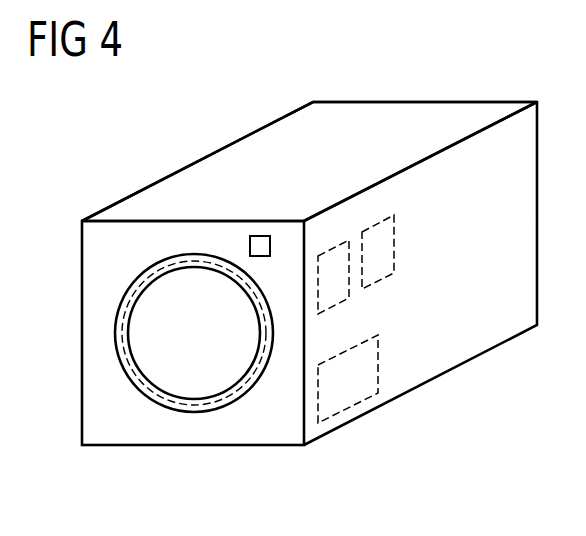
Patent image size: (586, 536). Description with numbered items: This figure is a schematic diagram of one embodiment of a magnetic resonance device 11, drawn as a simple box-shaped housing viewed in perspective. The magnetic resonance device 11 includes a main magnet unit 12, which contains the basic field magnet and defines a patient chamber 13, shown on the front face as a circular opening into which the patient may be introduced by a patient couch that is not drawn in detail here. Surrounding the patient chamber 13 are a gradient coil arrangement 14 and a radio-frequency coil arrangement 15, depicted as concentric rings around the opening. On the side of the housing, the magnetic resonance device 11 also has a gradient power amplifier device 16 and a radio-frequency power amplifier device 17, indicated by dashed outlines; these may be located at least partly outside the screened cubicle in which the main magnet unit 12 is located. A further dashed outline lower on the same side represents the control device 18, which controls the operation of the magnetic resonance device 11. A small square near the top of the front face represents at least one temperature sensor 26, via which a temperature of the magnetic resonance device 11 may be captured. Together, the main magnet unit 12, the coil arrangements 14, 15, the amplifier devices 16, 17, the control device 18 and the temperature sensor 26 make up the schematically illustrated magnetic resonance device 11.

The magnetic resonance device 11 is at (470, 423).
The main magnet unit 12 is at (450, 120).
The patient chamber 13 is at (147, 331).
The gradient coil arrangement 14 is at (216, 410).
The radio-frequency coil arrangement 15 is at (178, 408).
The gradient power amplifier device 16 is at (330, 247).
The radio-frequency power amplifier device 17 is at (377, 222).
The control device 18 is at (353, 406).
The temperature sensor 26 is at (260, 236).